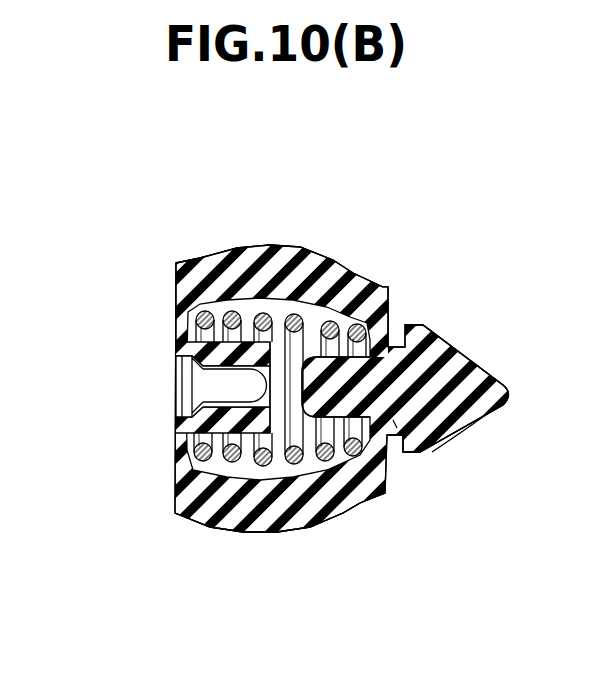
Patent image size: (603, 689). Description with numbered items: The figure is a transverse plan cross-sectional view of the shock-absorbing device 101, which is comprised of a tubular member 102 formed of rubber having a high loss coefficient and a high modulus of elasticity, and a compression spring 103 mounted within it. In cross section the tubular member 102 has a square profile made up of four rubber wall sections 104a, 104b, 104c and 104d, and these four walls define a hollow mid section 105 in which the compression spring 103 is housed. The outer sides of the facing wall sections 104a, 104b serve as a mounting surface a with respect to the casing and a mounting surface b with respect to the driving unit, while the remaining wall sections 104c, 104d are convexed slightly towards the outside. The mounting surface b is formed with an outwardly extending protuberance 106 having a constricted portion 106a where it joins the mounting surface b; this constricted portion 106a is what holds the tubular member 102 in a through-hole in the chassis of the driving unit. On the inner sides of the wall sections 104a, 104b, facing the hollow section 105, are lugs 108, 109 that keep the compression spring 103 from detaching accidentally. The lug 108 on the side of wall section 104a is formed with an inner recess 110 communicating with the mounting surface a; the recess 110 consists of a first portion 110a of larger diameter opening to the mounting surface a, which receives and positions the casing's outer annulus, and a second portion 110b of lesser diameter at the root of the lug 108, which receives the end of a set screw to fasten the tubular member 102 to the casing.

The shock-absorbing device 101 is at (405, 141).
The tubular member 102 is at (368, 257).
The compression spring 103 is at (238, 500).
The wall section 104a is at (184, 316).
The wall section 104b is at (382, 326).
The wall section 104c is at (295, 248).
The wall section 104d is at (303, 530).
The hollow mid section 105 is at (280, 363).
The protuberance 106 is at (489, 358).
The constricted portion 106a is at (407, 457).
The lug 108 is at (192, 467).
The lug 109 is at (330, 413).
The recess 110 is at (172, 395).
The first portion 110a is at (183, 355).
The second portion 110b is at (190, 418).
The mounting surface a is at (176, 262).
The mounting surface b is at (374, 463).